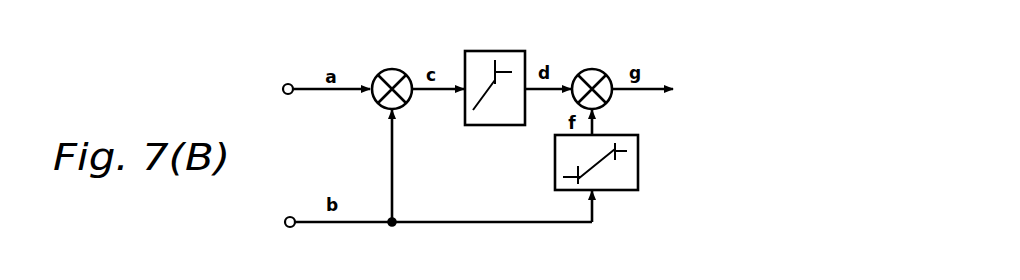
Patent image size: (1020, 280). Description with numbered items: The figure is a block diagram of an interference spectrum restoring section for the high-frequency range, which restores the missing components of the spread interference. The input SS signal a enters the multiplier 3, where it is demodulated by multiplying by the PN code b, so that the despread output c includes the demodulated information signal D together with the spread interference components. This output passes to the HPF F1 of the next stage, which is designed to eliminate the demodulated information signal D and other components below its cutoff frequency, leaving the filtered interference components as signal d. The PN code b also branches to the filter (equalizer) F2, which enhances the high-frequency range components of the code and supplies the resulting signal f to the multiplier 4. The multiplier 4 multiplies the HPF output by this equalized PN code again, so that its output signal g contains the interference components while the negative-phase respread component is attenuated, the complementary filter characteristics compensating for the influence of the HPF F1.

The multiplier 3 is at (389, 69).
The multiplier 4 is at (592, 68).
The HPF F1 is at (492, 125).
The filter (equalizer) F2 is at (640, 168).